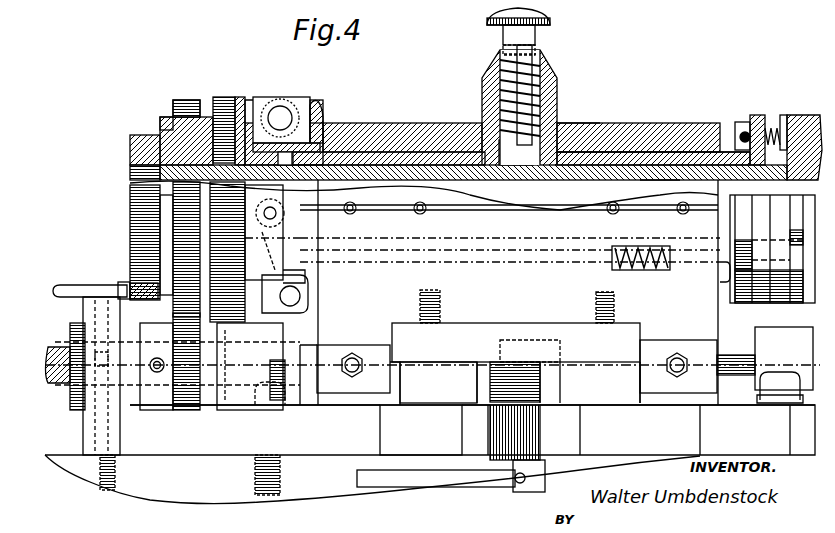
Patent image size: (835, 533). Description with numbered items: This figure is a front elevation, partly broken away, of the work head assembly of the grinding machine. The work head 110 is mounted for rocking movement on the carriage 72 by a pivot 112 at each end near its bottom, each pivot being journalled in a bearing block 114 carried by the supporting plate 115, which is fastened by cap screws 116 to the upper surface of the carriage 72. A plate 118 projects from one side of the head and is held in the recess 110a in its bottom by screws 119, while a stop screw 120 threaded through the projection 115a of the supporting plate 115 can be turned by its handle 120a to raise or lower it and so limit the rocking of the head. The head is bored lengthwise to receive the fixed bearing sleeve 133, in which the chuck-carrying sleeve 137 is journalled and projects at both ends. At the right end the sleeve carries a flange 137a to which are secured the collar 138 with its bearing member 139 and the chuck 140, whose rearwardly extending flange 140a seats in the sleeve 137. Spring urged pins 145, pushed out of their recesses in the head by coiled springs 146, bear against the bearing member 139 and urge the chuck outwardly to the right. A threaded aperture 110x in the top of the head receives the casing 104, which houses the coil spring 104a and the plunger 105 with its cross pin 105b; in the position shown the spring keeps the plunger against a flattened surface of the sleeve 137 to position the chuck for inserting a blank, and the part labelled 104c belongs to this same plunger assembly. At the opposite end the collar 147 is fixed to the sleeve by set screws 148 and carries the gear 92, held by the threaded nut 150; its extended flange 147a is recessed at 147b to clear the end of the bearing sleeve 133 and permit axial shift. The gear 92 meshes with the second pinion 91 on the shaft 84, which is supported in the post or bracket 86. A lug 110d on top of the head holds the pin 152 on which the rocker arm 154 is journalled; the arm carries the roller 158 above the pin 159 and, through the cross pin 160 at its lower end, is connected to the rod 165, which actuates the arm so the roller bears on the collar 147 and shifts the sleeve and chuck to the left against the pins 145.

The carriage 72 is at (146, 503).
The shaft 84 is at (63, 350).
The post or bracket 86 is at (98, 441).
The second pinion 91 is at (188, 412).
The gear 92 is at (186, 100).
The casing 104 is at (554, 78).
The coil spring 104a is at (535, 12).
The collar 104c is at (502, 53).
The plunger 105 is at (480, 134).
The cross pin 105b is at (495, 79).
The work head 110 is at (632, 123).
The recess 110a is at (640, 383).
The lug 110d is at (318, 120).
The threaded aperture 110x is at (560, 123).
The pivot 112 is at (312, 400).
The bearing block 114 is at (280, 322).
The supporting plate 115 is at (667, 448).
The projection 115a is at (460, 436).
The cap screw 116 is at (235, 400).
The plate 118 is at (545, 323).
The screw 119 is at (445, 308).
The stop screw 120 is at (490, 383).
The handle 120a is at (405, 486).
The bearing sleeve 133 is at (583, 150).
The chuck-carrying sleeve 137 is at (672, 180).
The flange 137a is at (768, 117).
The collar 138 is at (741, 118).
The bearing member 139 is at (730, 125).
The chuck 140 is at (800, 303).
The rearwardly extending flange 140a is at (655, 180).
The spring urged pin 145 is at (724, 280).
The coiled spring 146 is at (655, 270).
The collar 147 is at (240, 100).
The extended flange 147a is at (300, 152).
The recess 147b is at (322, 143).
The set screw 148 is at (222, 97).
The threaded nut 150 is at (160, 128).
The pin 152 is at (280, 97).
The rocker arm 154 is at (305, 278).
The roller 158 is at (285, 222).
The pin 159 is at (305, 242).
The cross pin 160 is at (300, 296).
The rod 165 is at (62, 284).